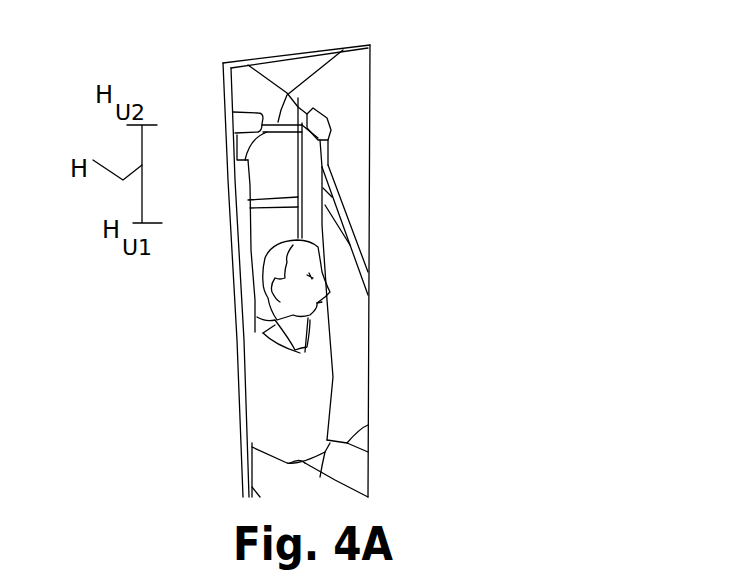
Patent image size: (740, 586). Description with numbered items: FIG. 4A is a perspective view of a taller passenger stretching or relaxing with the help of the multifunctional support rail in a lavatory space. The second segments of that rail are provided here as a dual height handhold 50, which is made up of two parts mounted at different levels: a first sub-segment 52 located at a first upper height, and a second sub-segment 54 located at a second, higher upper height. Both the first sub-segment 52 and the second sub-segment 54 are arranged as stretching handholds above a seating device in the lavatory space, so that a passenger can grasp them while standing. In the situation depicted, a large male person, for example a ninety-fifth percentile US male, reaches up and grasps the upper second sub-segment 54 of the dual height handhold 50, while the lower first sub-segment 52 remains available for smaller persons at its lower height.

The dual height handhold 50 is at (283, 161).
The first sub-segment 52 is at (268, 210).
The second sub-segment 54 is at (340, 50).